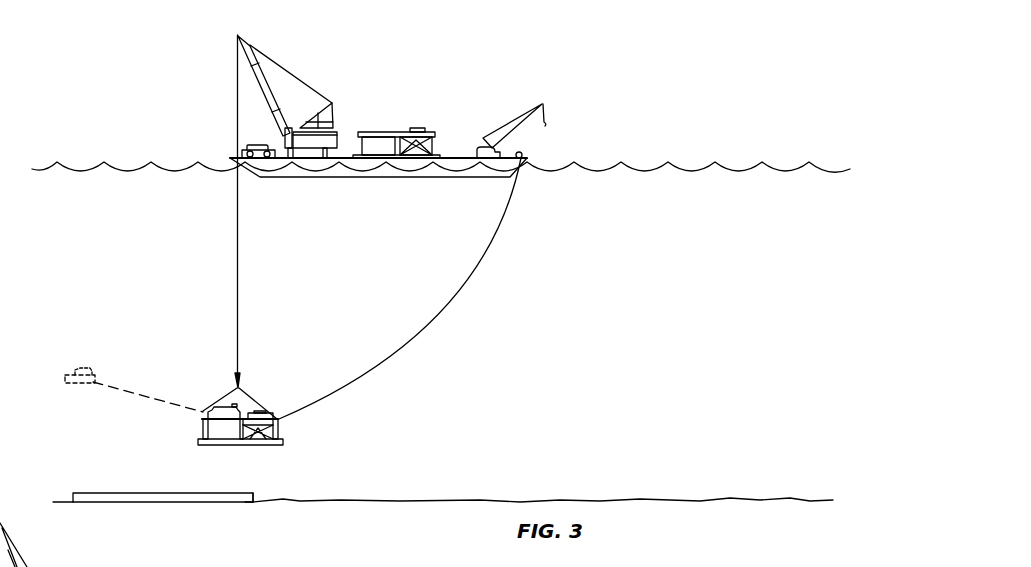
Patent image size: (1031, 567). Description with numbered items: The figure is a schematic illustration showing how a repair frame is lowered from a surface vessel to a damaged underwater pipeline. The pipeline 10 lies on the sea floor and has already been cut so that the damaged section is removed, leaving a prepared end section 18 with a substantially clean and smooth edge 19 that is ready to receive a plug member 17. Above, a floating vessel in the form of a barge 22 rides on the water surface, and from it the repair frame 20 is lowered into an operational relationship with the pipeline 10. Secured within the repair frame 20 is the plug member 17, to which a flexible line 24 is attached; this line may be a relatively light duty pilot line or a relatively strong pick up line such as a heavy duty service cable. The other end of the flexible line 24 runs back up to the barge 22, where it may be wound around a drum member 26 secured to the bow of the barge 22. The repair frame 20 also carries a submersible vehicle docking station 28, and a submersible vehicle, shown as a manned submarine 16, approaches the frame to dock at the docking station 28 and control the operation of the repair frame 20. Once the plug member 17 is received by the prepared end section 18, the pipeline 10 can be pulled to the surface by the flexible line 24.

The pipeline 10 is at (118, 493).
The manned submarine 16 is at (221, 405).
The plug member 17 is at (281, 428).
The prepared end section 18 is at (255, 504).
The edge 19 is at (256, 497).
The repair frame 20 is at (273, 409).
The barge 22 is at (403, 178).
The flexible line 24 is at (369, 372).
The drum member 26 is at (525, 154).
The submersible vehicle docking station 28 is at (201, 415).